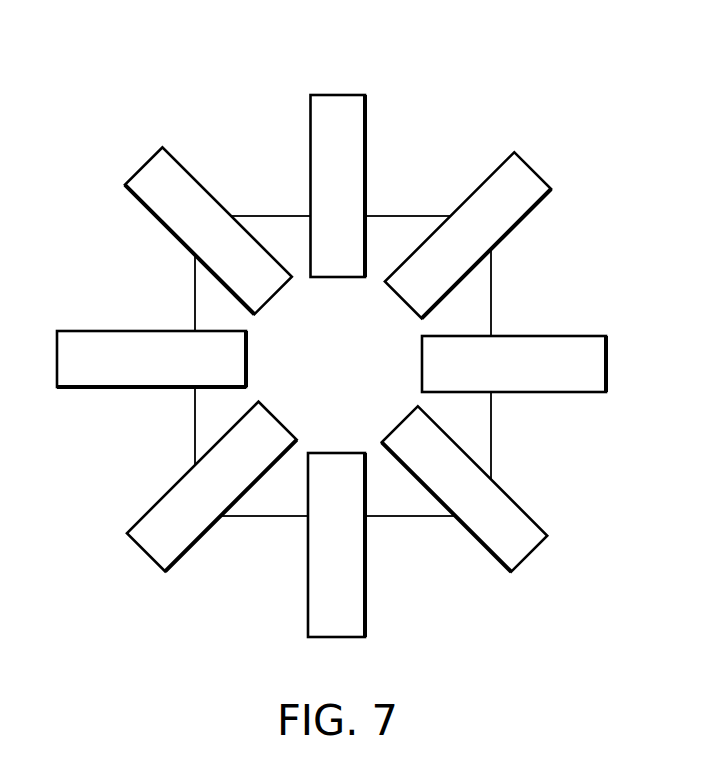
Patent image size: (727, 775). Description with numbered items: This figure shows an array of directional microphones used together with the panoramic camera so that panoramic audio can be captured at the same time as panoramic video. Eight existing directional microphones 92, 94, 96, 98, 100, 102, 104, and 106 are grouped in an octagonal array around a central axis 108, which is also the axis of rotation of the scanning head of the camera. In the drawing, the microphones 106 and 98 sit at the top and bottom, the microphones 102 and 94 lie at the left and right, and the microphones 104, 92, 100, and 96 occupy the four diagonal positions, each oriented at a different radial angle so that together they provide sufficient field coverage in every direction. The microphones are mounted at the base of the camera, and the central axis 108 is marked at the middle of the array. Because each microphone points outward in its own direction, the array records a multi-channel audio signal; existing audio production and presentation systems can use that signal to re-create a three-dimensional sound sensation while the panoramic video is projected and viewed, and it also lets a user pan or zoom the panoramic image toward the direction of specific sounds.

The microphone 92 is at (522, 222).
The microphone 94 is at (552, 393).
The microphone 96 is at (488, 553).
The microphone 98 is at (308, 598).
The microphone 100 is at (158, 502).
The microphone 102 is at (140, 331).
The microphone 104 is at (197, 182).
The microphone 106 is at (365, 152).
The central axis 108 is at (362, 372).